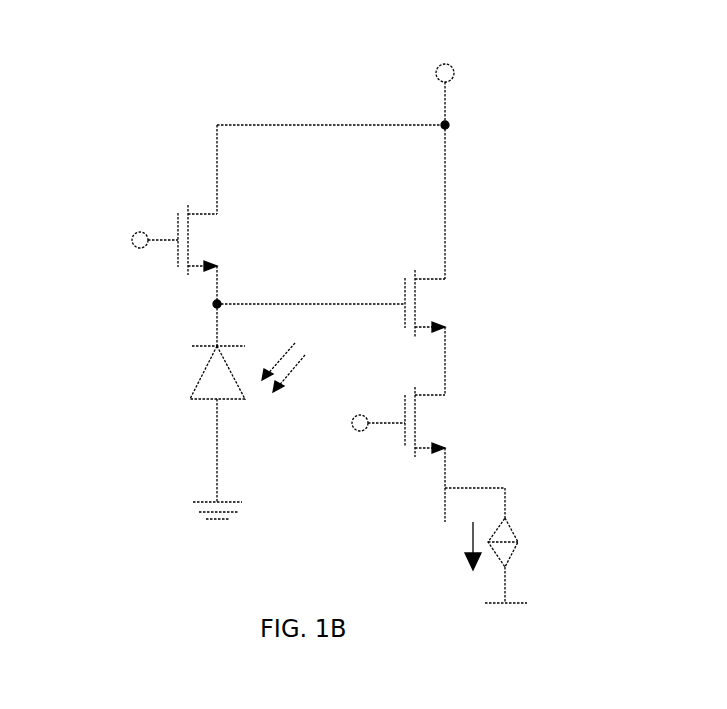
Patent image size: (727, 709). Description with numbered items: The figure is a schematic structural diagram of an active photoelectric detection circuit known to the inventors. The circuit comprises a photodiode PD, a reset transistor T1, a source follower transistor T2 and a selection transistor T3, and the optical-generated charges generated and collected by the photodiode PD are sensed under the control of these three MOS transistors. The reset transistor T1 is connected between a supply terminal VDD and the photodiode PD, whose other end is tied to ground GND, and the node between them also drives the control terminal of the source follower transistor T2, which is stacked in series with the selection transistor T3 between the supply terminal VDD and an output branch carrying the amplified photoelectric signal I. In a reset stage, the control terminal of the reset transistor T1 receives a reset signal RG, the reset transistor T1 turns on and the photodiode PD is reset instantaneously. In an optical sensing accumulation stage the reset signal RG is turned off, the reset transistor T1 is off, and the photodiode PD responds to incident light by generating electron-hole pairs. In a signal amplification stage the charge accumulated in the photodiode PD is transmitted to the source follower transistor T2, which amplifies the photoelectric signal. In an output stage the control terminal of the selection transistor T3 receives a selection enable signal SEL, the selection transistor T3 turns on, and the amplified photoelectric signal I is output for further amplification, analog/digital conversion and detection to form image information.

The supply voltage terminal VDD is at (444, 75).
The reset signal RG is at (136, 218).
The reset transistor T1 is at (291, 256).
The source follower transistor T2 is at (455, 260).
The selection transistor T3 is at (455, 454).
The selection enable signal SEL is at (365, 443).
The amplified photoelectric signal I is at (482, 545).
The photodiode PD is at (203, 378).
The ground GND is at (217, 533).